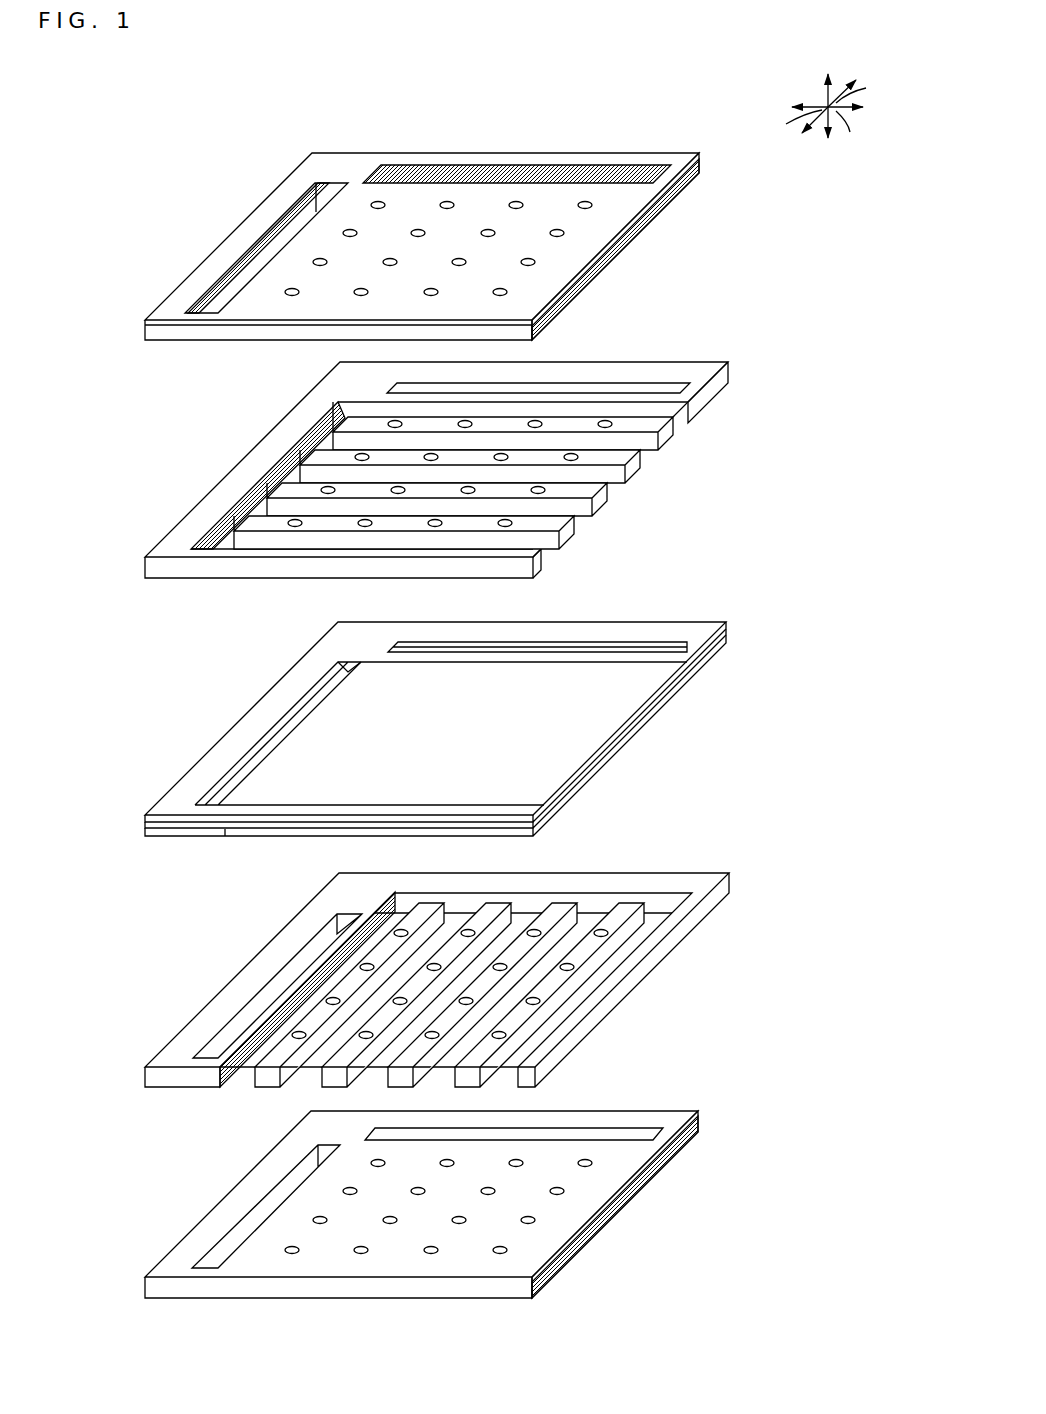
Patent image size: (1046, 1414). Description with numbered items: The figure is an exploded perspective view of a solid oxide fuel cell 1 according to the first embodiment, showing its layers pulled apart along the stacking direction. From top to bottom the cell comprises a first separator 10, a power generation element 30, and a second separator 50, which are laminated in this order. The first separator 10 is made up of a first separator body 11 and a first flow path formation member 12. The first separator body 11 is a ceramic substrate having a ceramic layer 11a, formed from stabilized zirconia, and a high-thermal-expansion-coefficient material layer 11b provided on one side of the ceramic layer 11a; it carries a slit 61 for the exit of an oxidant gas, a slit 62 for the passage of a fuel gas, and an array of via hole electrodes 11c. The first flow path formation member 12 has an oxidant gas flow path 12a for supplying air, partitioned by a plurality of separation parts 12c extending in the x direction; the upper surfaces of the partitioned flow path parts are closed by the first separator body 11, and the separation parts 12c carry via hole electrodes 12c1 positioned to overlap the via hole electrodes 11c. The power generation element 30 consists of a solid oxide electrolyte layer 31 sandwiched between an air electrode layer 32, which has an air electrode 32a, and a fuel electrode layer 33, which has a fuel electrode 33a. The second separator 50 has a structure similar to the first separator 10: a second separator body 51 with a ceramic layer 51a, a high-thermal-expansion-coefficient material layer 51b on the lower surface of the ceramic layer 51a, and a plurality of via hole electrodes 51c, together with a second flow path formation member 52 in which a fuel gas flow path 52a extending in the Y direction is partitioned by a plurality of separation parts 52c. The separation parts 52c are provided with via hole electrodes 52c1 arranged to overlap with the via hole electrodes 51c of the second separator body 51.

The solid oxide fuel cell 1 is at (690, 126).
The first separator 10 is at (782, 203).
The first separator body 11 is at (704, 169).
The ceramic layer 11a is at (657, 215).
The high-thermal-expansion-coefficient material layer 11b is at (700, 153).
The via hole electrodes 11c is at (594, 202).
The first flow path formation member 12 is at (692, 358).
The oxidant gas flow path 12a is at (681, 417).
The separation parts 12c is at (637, 466).
The via hole electrodes 12c1 is at (608, 420).
The power generation element 30 is at (803, 592).
The solid oxide electrolyte layer 31 is at (729, 630).
The air electrode layer 32 is at (733, 620).
The air electrode 32a is at (604, 717).
The fuel electrode layer 33 is at (738, 642).
The fuel electrode 33a is at (252, 838).
The second separator 50 is at (795, 1012).
The second separator body 51 is at (704, 1118).
The ceramic layer 51a is at (697, 1130).
The high-thermal-expansion-coefficient material layer 51b is at (683, 1153).
The via hole electrodes 51c is at (597, 1165).
The second flow path formation member 52 is at (706, 924).
The fuel gas flow path 52a is at (233, 1085).
The separation parts 52c is at (600, 966).
The via hole electrodes 52c1 is at (615, 927).
The slit 61 is at (270, 244).
The slit 62 is at (502, 176).